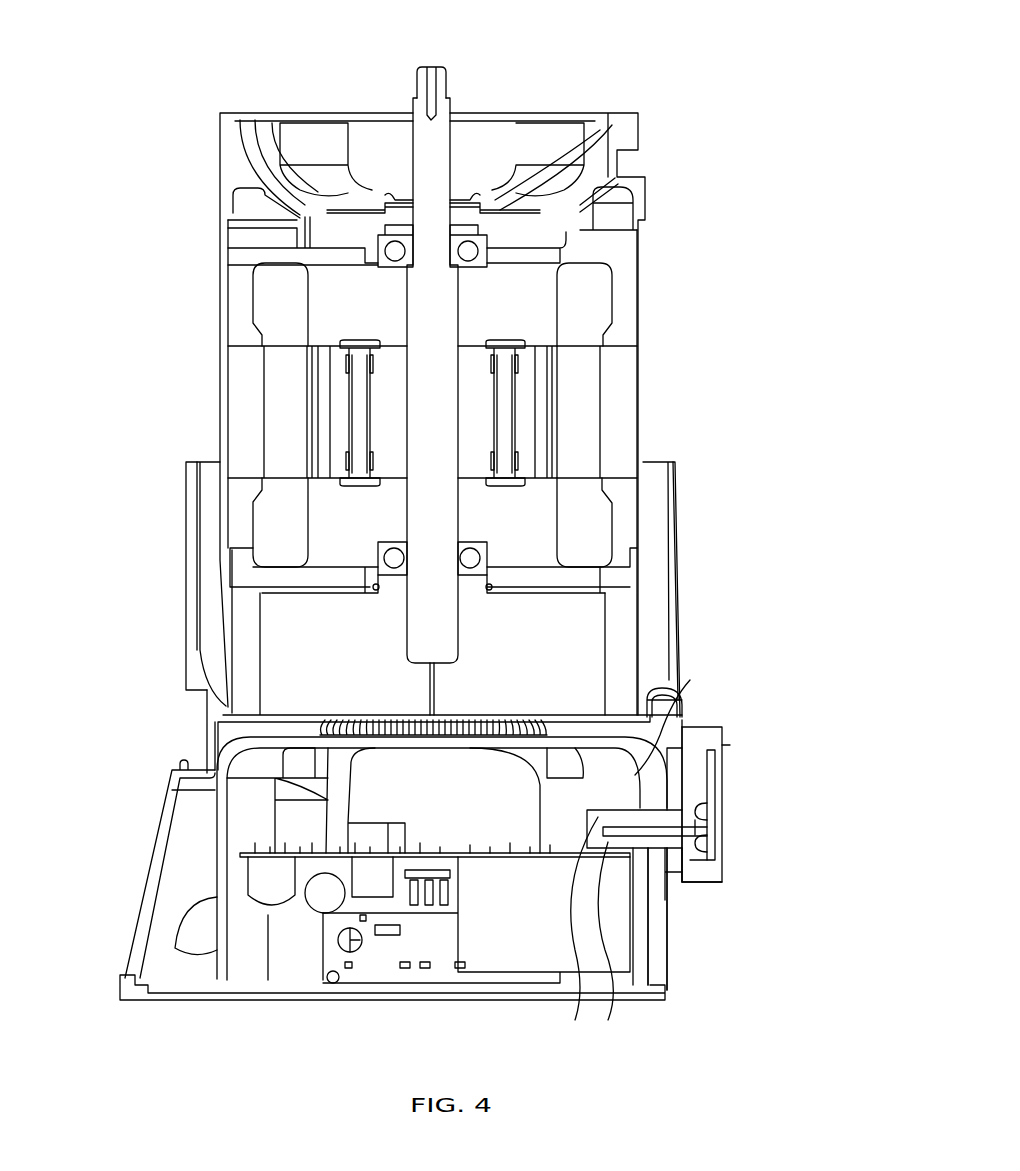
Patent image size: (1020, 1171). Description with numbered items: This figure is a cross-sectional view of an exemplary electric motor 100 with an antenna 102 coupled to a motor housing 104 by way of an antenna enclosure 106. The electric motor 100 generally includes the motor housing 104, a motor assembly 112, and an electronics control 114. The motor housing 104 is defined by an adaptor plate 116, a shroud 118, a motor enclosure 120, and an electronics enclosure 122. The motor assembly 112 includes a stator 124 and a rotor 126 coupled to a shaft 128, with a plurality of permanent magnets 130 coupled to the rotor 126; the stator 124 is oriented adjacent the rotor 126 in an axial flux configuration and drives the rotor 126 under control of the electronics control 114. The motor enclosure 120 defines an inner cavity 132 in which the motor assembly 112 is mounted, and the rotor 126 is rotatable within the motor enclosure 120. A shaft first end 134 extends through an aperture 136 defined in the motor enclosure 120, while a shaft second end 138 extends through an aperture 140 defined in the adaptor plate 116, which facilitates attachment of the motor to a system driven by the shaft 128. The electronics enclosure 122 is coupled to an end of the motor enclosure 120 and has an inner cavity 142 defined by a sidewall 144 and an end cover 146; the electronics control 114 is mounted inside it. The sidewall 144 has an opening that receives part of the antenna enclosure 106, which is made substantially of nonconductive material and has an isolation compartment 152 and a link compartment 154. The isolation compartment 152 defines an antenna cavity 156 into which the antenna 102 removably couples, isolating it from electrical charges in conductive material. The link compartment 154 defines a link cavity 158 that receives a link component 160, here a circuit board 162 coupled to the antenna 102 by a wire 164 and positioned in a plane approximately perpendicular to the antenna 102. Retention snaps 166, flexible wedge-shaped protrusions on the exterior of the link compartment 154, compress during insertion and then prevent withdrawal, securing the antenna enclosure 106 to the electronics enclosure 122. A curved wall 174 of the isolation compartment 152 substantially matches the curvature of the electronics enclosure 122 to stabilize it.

The electric motor 100 is at (168, 645).
The antenna 102 is at (712, 780).
The motor housing 104 is at (645, 402).
The antenna enclosure 106 is at (786, 768).
The motor assembly 112 is at (248, 518).
The electronics control 114 is at (395, 872).
The adaptor plate 116 is at (362, 125).
The shroud 118 is at (678, 498).
The motor enclosure 120 is at (645, 340).
The electronics enclosure 122 is at (140, 898).
The stator 124 is at (270, 308).
The rotor 126 is at (338, 431).
The shaft 128 is at (455, 125).
The permanent magnets 130 is at (323, 406).
The inner cavity 132 is at (622, 325).
The shaft first end 134 is at (443, 638).
The aperture 136 is at (457, 603).
The shaft second end 138 is at (415, 82).
The aperture 140 is at (478, 160).
The inner cavity 142 is at (245, 812).
The sidewall 144 is at (667, 893).
The end cover 146 is at (210, 1000).
The isolation compartment 152 is at (700, 730).
The link compartment 154 is at (575, 1020).
The antenna cavity 156 is at (722, 742).
The link cavity 158 is at (608, 1020).
The link component 160 is at (686, 870).
The circuit board 162 is at (690, 845).
The wire 164 is at (690, 815).
The retention snaps 166 is at (640, 700).
The curved wall 174 is at (683, 718).